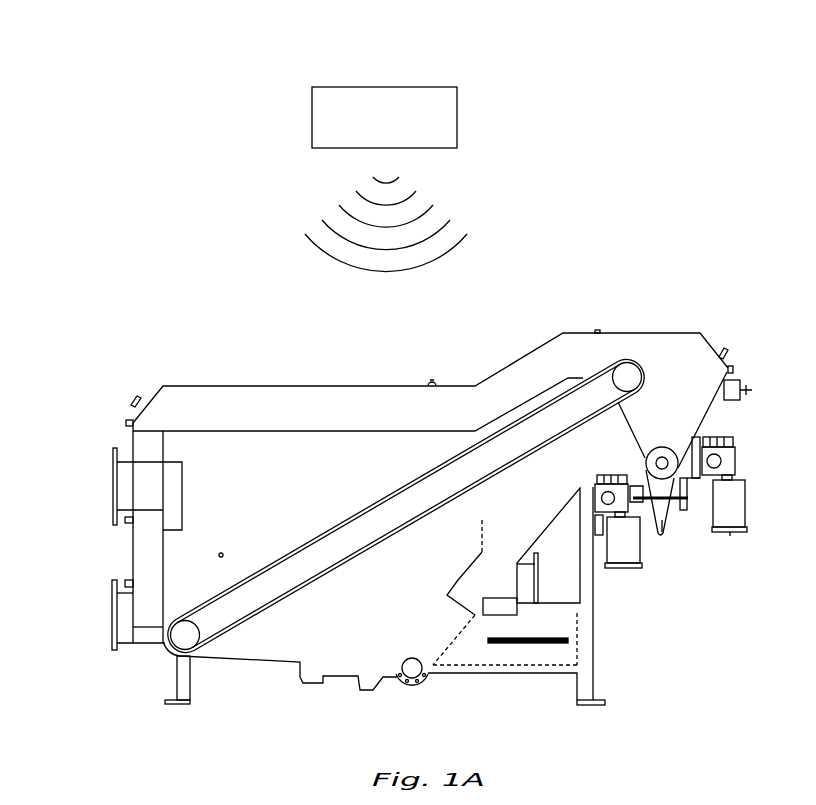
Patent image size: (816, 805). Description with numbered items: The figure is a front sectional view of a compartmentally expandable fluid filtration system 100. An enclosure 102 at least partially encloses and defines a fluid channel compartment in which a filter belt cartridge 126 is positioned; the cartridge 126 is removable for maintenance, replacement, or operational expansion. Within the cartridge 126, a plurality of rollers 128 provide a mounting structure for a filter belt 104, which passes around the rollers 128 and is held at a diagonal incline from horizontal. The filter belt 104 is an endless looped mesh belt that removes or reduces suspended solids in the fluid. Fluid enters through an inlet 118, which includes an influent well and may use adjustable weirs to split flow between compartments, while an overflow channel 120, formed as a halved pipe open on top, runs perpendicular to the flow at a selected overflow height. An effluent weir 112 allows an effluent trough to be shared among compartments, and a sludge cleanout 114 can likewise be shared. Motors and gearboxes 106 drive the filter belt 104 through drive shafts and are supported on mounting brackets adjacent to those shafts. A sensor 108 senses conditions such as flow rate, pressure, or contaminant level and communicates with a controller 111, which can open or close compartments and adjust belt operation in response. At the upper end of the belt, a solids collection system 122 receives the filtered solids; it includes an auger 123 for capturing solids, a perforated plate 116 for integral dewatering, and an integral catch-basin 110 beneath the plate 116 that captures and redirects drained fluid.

The fluid filtration system 100 is at (152, 312).
The enclosure 102 is at (233, 386).
The filter belt 104 is at (343, 523).
The motors and gearboxes 106 is at (731, 533).
The sensor 108 is at (222, 550).
The integral catch-basin 110 is at (661, 537).
The controller 111 is at (388, 87).
The effluent weir 112 is at (457, 578).
The sludge cleanout 114 is at (397, 678).
The perforated plate 116 is at (665, 482).
The inlet 118 is at (95, 490).
The overflow channel 120 is at (95, 623).
The solids collection system 122 is at (665, 425).
The auger 123 is at (676, 440).
The filter belt cartridge 126 is at (305, 510).
The rollers 128 is at (186, 638).